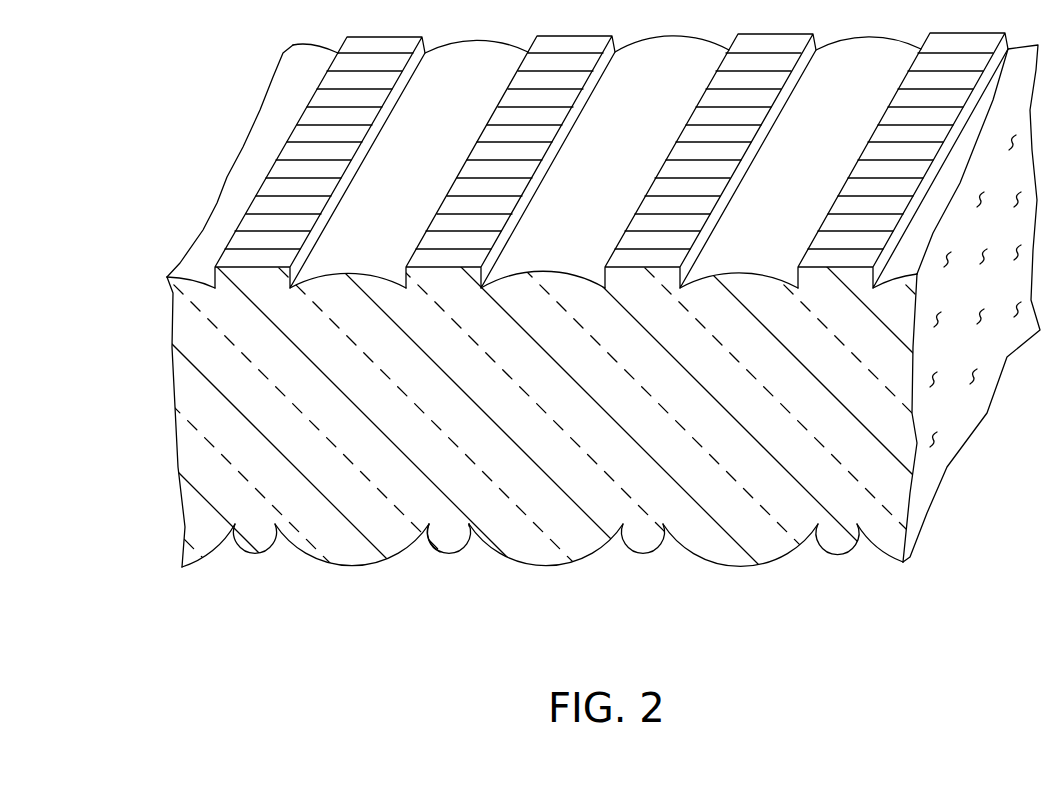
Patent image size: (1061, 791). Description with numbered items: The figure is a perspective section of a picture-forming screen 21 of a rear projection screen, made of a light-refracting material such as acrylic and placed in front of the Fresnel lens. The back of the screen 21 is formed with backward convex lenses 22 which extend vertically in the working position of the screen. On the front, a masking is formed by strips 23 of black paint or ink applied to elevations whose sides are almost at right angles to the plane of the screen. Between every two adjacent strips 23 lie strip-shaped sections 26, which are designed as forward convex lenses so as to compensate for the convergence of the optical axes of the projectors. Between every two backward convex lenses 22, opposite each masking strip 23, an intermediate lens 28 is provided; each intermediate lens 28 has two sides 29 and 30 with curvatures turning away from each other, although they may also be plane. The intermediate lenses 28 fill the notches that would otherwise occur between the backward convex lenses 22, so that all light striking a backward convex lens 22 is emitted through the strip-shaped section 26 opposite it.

The picture-forming lens 21 is at (352, 508).
The backward convex lenses 22 is at (362, 568).
The masking strips 23 is at (367, 43).
The strip-shaped sections 26 is at (463, 58).
The intermediate lenses 28 is at (260, 553).
The side of intermediate lens 29 is at (440, 552).
The side of intermediate lens 30 is at (470, 527).